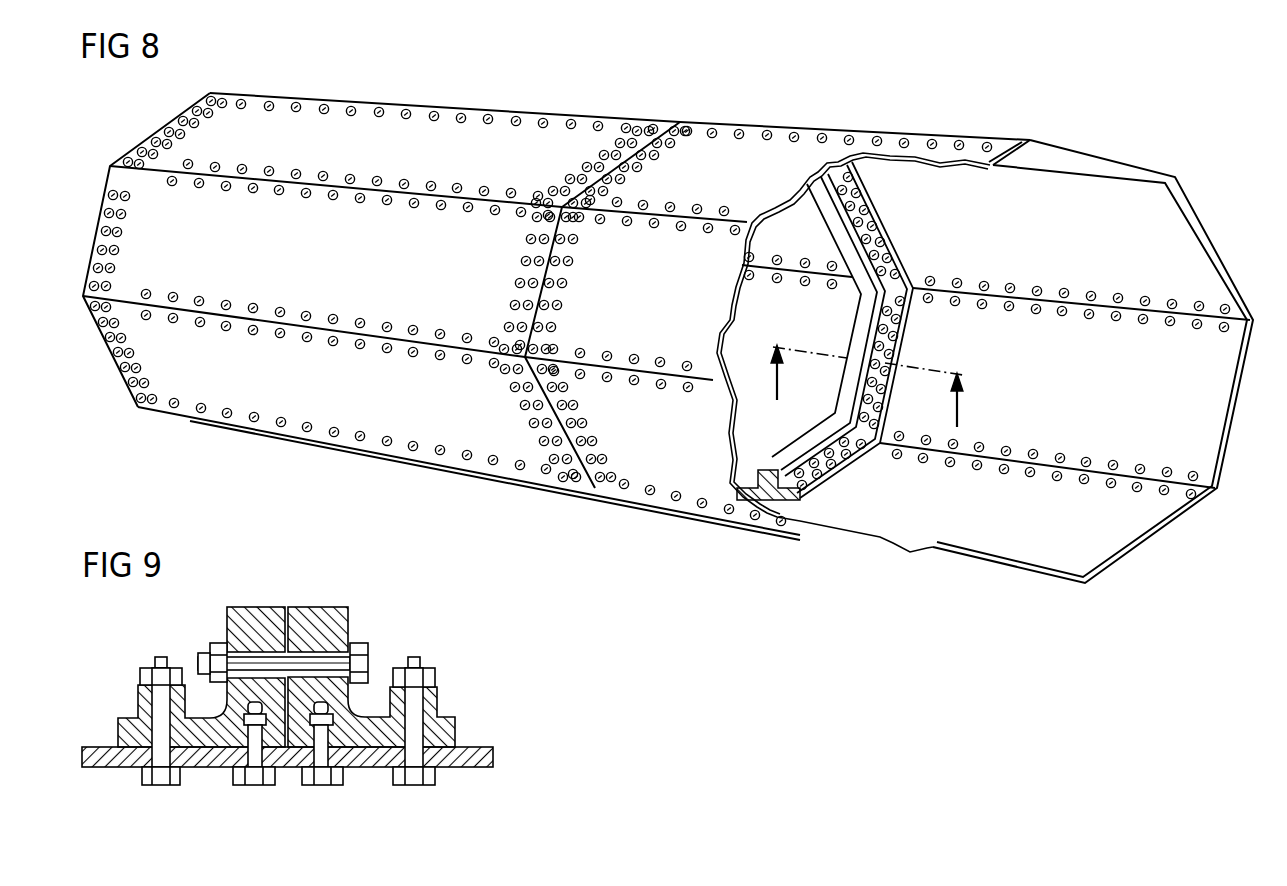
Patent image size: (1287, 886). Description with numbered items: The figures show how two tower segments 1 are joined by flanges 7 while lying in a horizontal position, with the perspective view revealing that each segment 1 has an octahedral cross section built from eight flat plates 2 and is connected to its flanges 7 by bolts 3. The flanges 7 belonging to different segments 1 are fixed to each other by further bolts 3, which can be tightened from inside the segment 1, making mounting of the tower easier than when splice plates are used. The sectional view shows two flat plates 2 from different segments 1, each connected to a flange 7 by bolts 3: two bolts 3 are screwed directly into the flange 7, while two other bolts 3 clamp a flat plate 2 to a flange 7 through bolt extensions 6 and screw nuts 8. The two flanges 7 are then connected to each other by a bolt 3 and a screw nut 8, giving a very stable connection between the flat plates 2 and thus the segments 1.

In FIG. 8, the segment 1 is at (482, 102).
In FIG. 8, the flat plate 2 is at (399, 440).
In FIG. 9, the flat plate 2 is at (103, 757).
In FIG. 8, the bolt 3 is at (545, 440).
In FIG. 9, the bolt 3 is at (160, 780).
In FIG. 9, the bolt extension 6 is at (138, 700).
In FIG. 8, the flange 7 is at (800, 490).
In FIG. 9, the flange 7 is at (317, 607).
In FIG. 9, the screw nut 8 is at (180, 670).